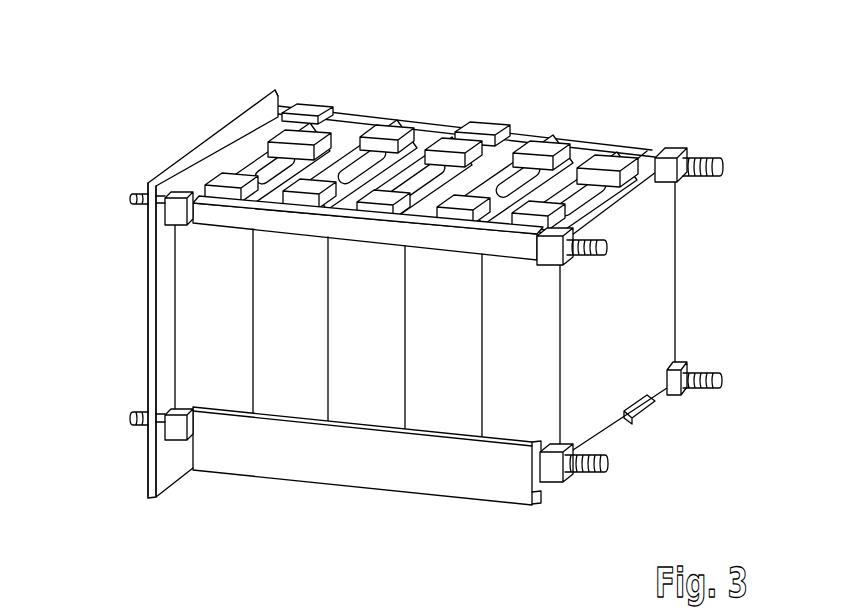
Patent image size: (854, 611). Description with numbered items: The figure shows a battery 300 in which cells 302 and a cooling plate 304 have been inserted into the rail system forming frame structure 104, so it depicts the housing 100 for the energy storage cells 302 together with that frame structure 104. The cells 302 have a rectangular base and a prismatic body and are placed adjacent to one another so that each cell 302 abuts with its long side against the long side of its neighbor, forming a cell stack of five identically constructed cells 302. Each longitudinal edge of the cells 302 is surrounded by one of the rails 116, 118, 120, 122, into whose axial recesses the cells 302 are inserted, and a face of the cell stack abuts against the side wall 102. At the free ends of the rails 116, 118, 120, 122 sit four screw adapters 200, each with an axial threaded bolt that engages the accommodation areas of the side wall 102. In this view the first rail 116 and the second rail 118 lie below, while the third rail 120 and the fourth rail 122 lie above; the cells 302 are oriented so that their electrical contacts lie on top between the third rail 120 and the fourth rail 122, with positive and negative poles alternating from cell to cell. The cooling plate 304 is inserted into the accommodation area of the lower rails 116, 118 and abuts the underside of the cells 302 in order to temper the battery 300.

The housing 100 is at (497, 86).
The frame structure 104 is at (624, 316).
The side wall 102 is at (207, 156).
The first rail 116 is at (447, 482).
The second rail 118 is at (652, 408).
The third rail 120 is at (593, 147).
The fourth rail 122 is at (463, 243).
The screw adapter 200 is at (663, 148).
The battery 300 is at (213, 90).
The cell 302 is at (418, 144).
The cooling plate 304 is at (614, 438).